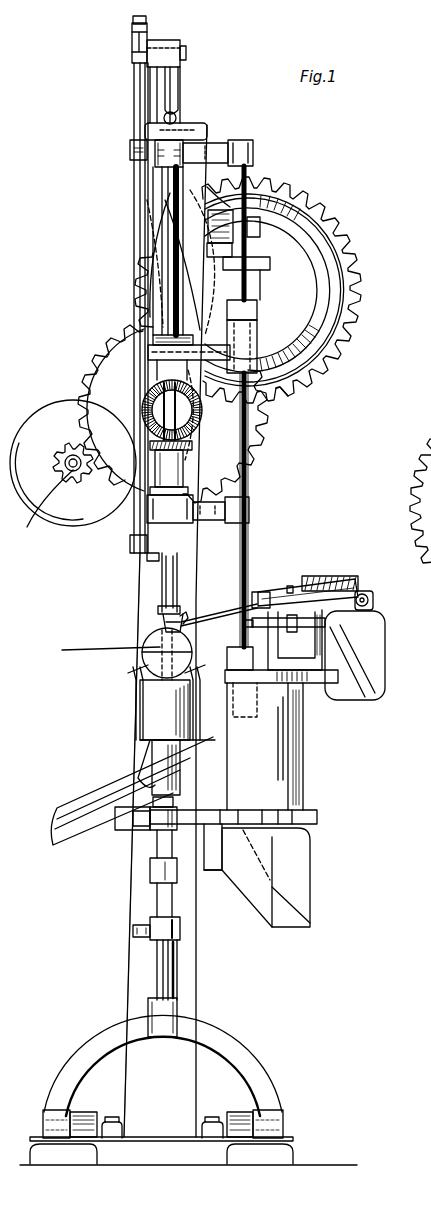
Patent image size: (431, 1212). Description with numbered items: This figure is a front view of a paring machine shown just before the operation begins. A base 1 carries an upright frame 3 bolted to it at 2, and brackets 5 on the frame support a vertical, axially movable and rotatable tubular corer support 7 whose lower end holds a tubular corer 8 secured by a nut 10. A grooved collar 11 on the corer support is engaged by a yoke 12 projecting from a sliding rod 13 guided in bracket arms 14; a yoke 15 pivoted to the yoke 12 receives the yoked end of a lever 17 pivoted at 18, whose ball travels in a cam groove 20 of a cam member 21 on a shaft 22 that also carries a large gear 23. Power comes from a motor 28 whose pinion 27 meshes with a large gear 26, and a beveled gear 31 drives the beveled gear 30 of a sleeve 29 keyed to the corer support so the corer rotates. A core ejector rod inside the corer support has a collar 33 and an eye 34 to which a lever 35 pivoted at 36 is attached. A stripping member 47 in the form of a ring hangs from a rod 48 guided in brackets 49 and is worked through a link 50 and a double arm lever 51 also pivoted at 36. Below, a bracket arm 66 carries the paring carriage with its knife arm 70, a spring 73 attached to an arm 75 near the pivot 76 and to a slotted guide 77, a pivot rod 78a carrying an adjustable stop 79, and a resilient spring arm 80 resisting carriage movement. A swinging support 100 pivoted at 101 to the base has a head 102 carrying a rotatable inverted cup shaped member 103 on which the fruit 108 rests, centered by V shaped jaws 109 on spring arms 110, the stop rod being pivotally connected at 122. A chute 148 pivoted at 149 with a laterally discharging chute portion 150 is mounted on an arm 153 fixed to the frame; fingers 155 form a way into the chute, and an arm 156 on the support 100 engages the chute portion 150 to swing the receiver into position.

The base 1 is at (298, 1155).
The bolting point 2 is at (220, 1100).
The upright frame 3 is at (125, 968).
The brackets 5 is at (160, 150).
The tubular corer support 7 is at (160, 580).
The tubular corer 8 is at (162, 622).
The nut 10 is at (160, 602).
The grooved collar 11 is at (122, 338).
The yoke 12 is at (263, 417).
The sliding rod 13 is at (205, 464).
The bracket arms 14 is at (240, 145).
The yoke 15 is at (327, 347).
The lever 17 is at (325, 262).
The pivot 18 is at (277, 230).
The cam groove 20 is at (320, 305).
The cam member 21 is at (313, 283).
The shaft 22 is at (420, 532).
The large gear 23 is at (312, 393).
The large gear 26 is at (97, 358).
The pinion 27 is at (40, 530).
The motor 28 is at (75, 485).
The sleeve 29 is at (235, 452).
The beveled gear 30 is at (225, 432).
The beveled gear 31 is at (70, 407).
The collar 33 is at (190, 124).
The eye 34 is at (176, 114).
The lever 35 is at (176, 92).
The pivot 36 is at (181, 48).
The stripping member 47 is at (150, 560).
The rod 48 is at (153, 192).
The brackets 49 is at (130, 148).
The link 50 is at (132, 42).
The double arm lever 51 is at (150, 26).
The bracket arm 66 is at (362, 697).
The knife arm 70 is at (210, 615).
The spring 73 is at (330, 575).
The arm 75 is at (372, 596).
The pivot 76 is at (370, 603).
The slotted guide 77 is at (267, 587).
The pivot rod 78a is at (343, 618).
The stop 79 is at (312, 576).
The resilient spring arm 80 is at (318, 683).
The swinging support 100 is at (178, 972).
The pivot 101 is at (255, 1125).
The head 102 is at (120, 778).
The inverted cup shaped member 103 is at (150, 702).
The fruit 108 is at (150, 648).
The V shaped jaws 109 is at (135, 667).
The spring arms 110 is at (198, 750).
The pivotal connection 122 is at (133, 930).
The chute 148 is at (303, 778).
The pivots 149 is at (300, 822).
The laterally discharging chute portion 150 is at (300, 886).
The arm 153 is at (290, 852).
The fingers 155 is at (114, 641).
The arm 156 is at (205, 865).